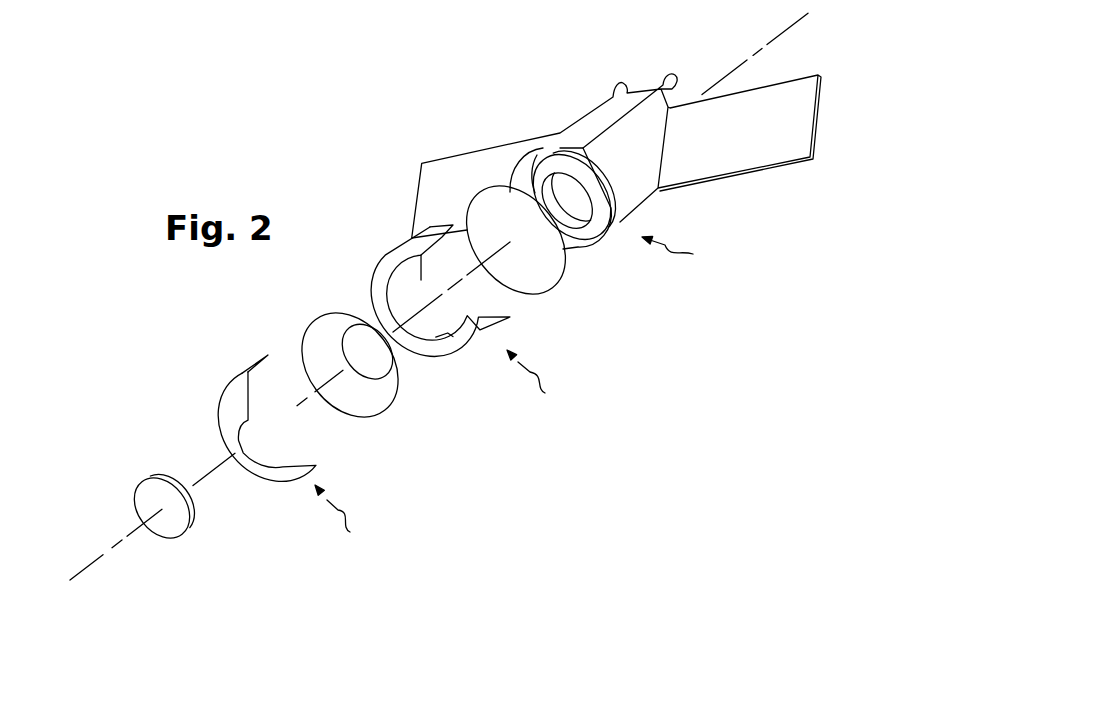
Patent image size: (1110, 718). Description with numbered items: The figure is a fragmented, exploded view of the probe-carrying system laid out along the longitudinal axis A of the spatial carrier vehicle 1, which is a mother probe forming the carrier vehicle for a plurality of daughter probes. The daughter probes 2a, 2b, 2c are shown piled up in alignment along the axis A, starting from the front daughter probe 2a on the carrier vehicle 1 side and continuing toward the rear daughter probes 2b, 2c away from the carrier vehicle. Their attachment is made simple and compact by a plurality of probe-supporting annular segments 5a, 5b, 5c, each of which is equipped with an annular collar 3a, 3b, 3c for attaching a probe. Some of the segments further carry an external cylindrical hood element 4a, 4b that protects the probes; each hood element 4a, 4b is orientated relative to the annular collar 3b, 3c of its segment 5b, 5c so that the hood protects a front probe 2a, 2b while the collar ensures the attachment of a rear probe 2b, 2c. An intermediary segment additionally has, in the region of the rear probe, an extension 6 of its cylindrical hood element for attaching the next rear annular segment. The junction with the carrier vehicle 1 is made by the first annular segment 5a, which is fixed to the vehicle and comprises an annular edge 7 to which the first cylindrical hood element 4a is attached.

The spatial carrier vehicle 1 is at (636, 188).
The daughter probe 2a is at (540, 280).
The daughter probe 2b is at (373, 402).
The daughter probe 2c is at (193, 513).
The annular collar 3a is at (598, 218).
The annular collar 3b is at (450, 350).
The annular collar 3c is at (265, 477).
The cylindrical hood element 4a is at (432, 236).
The cylindrical hood element 4b is at (250, 362).
The probe-supporting annular segment 5a is at (682, 252).
The probe-supporting annular segment 5b is at (541, 381).
The probe-supporting annular segment 5c is at (348, 518).
The extension 6 is at (430, 358).
The annular edge 7 is at (583, 246).
The longitudinal axis A is at (93, 562).